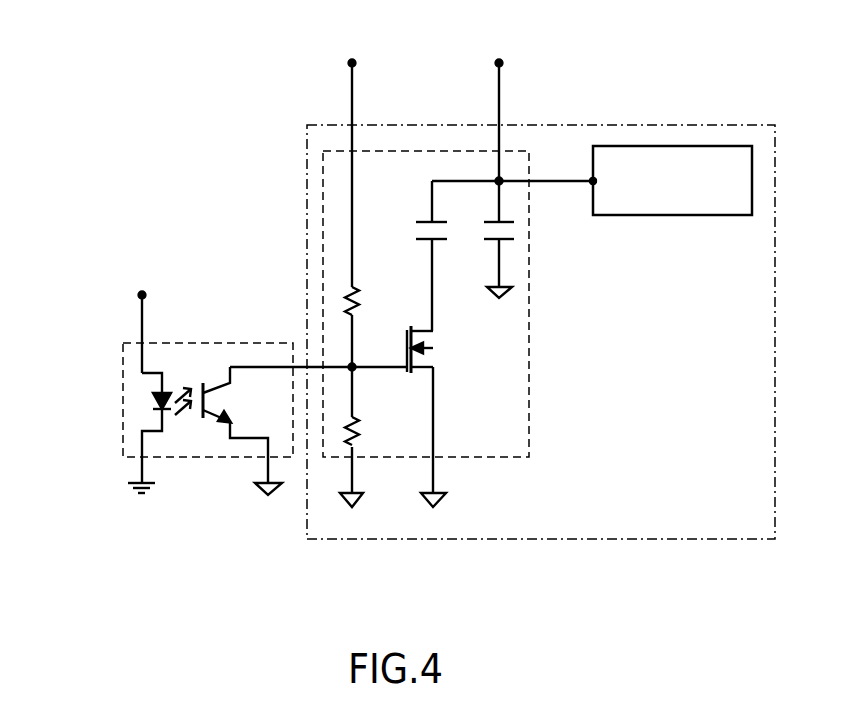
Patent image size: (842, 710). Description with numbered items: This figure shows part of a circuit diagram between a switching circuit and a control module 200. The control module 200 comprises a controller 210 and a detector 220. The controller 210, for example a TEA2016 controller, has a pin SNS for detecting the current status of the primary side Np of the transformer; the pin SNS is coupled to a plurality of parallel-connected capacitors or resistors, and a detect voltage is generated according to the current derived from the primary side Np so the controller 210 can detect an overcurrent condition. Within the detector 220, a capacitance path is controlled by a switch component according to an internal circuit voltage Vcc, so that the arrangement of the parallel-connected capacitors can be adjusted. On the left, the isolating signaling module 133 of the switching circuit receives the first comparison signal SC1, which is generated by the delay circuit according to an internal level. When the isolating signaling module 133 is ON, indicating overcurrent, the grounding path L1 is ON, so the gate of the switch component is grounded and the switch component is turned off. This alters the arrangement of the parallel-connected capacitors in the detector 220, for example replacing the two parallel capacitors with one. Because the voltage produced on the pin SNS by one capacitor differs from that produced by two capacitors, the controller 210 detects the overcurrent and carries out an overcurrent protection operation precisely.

The control module 200 is at (553, 539).
The controller 210 is at (636, 146).
The detector 220 is at (529, 415).
The isolating signaling module 133 is at (208, 425).
The grounding path L1 is at (206, 428).
The pin SNS is at (593, 183).
The internal circuit voltage Vcc is at (352, 44).
The primary side Np is at (498, 44).
The first comparison signal SC1 is at (139, 282).